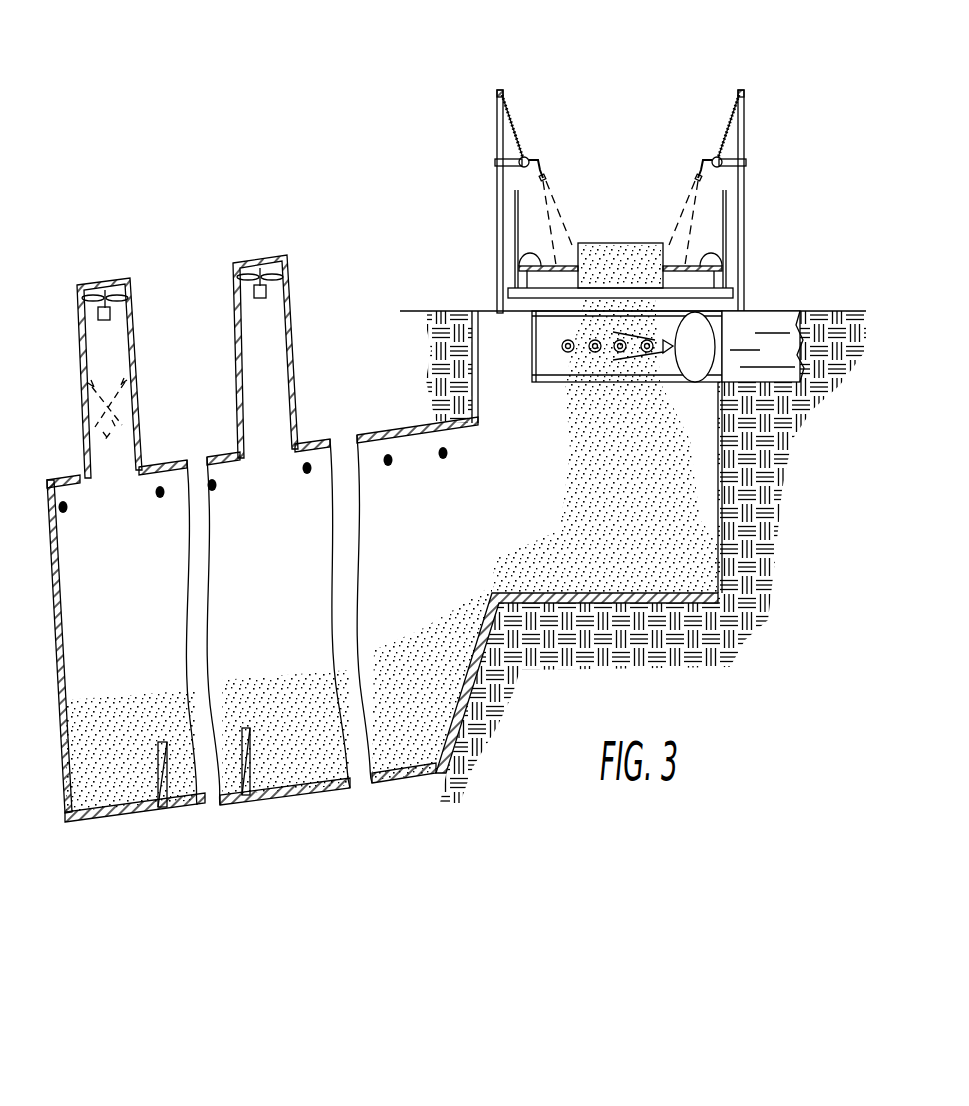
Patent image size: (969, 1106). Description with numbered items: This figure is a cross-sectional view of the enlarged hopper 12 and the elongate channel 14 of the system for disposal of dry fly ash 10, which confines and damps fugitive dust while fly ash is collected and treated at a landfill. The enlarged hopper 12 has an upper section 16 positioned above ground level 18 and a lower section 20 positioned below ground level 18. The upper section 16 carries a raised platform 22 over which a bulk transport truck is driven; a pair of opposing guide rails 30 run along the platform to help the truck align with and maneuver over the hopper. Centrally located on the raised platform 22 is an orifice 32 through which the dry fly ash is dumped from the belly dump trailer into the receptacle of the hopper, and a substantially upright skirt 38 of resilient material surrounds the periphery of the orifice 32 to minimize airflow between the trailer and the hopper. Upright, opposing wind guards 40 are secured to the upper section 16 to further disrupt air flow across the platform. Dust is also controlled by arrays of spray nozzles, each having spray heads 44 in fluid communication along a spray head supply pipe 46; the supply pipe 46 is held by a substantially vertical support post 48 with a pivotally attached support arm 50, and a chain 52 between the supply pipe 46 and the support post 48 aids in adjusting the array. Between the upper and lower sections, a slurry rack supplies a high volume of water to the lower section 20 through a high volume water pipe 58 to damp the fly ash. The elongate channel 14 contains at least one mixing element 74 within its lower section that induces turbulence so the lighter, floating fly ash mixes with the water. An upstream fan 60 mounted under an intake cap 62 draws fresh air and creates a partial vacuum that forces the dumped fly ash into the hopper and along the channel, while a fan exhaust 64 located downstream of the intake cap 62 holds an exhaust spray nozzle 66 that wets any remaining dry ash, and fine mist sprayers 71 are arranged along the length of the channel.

The system for disposal of dry fly ash 10 is at (192, 62).
The enlarged hopper 12 is at (388, 123).
The elongate channel 14 is at (290, 803).
The upper section 16 is at (806, 177).
The ground level 18 is at (417, 311).
The lower section 20 is at (695, 580).
The raised platform 22 is at (677, 230).
The guide rails 30 is at (528, 240).
The orifice 32 is at (620, 260).
The upright skirt 38 is at (575, 247).
The wind guards 40 is at (513, 238).
The spray heads 44 is at (538, 173).
The spray head supply pipe 46 is at (527, 157).
The support post 48 is at (500, 127).
The support arm 50 is at (510, 157).
The chain 52 is at (512, 110).
The high volume water pipe 58 is at (787, 330).
The upstream fan 60 is at (250, 270).
The intake cap 62 is at (287, 320).
The fan exhaust 64 is at (127, 307).
The exhaust spray nozzle 66 is at (127, 378).
The fine mist sprayers 71 is at (388, 453).
The mixing element 74 is at (160, 765).